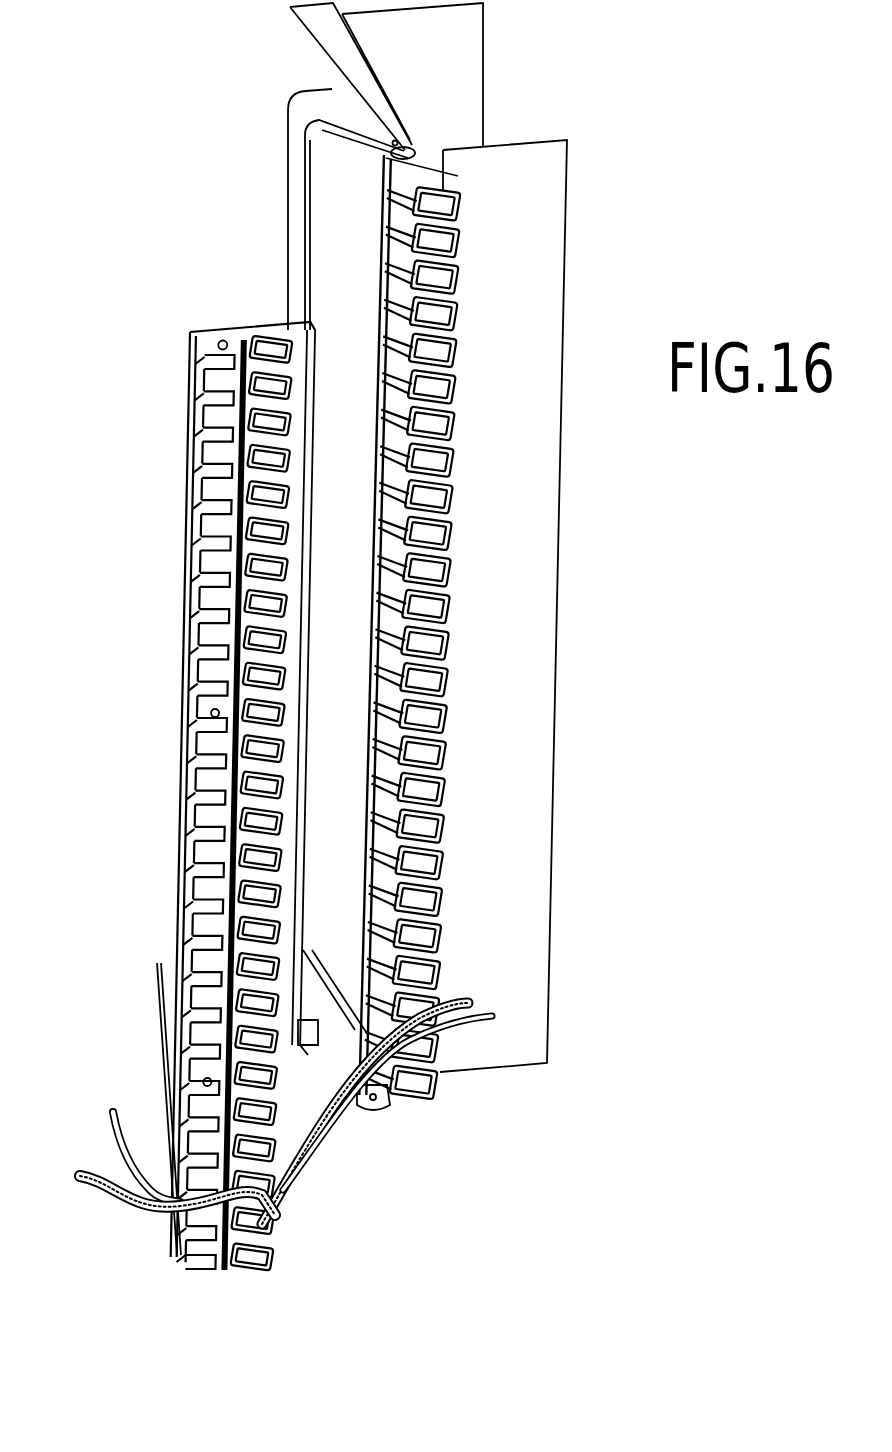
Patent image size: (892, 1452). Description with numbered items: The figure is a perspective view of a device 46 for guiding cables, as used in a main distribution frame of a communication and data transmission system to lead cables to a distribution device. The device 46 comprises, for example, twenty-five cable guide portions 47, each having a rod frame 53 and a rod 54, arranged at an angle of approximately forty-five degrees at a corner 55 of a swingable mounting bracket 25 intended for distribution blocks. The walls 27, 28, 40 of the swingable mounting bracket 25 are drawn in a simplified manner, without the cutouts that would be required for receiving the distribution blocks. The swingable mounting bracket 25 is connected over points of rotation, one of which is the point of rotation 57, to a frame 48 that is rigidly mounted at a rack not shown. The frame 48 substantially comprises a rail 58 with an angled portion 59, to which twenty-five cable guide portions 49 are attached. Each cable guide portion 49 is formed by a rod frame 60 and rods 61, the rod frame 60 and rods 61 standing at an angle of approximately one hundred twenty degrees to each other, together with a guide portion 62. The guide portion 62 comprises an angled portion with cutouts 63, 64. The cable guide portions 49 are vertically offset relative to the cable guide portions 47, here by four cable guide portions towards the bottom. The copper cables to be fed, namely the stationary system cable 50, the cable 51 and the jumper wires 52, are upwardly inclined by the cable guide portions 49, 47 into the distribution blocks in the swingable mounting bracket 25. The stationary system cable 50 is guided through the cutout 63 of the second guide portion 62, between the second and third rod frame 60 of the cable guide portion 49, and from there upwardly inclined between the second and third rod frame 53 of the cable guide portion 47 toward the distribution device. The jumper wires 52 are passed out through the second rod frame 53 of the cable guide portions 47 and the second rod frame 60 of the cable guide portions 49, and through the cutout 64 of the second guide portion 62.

The swingable mounting bracket 25 is at (543, 571).
The wall 27 is at (543, 178).
The wall 28 is at (457, 40).
The wall 40 is at (338, 175).
The device for guiding cables 46 is at (521, 659).
The cable guide portion 47 is at (455, 240).
The frame 48 is at (317, 544).
The cable guide portion 49 is at (194, 763).
The stationary system cable 50 is at (93, 1172).
The copper cable 51 is at (132, 1103).
The jumper wire 52 is at (162, 980).
The rod frame 53 is at (457, 278).
The rod 54 is at (455, 318).
The corner 55 is at (350, 1105).
The point of rotation 57 is at (378, 1100).
The rail 58 is at (295, 215).
The angled portion 59 is at (283, 340).
The rod frame 60 is at (235, 380).
The rod 61 is at (235, 432).
The guide portion 62 is at (217, 570).
The cutout 63 is at (213, 505).
The cutout 64 is at (217, 540).